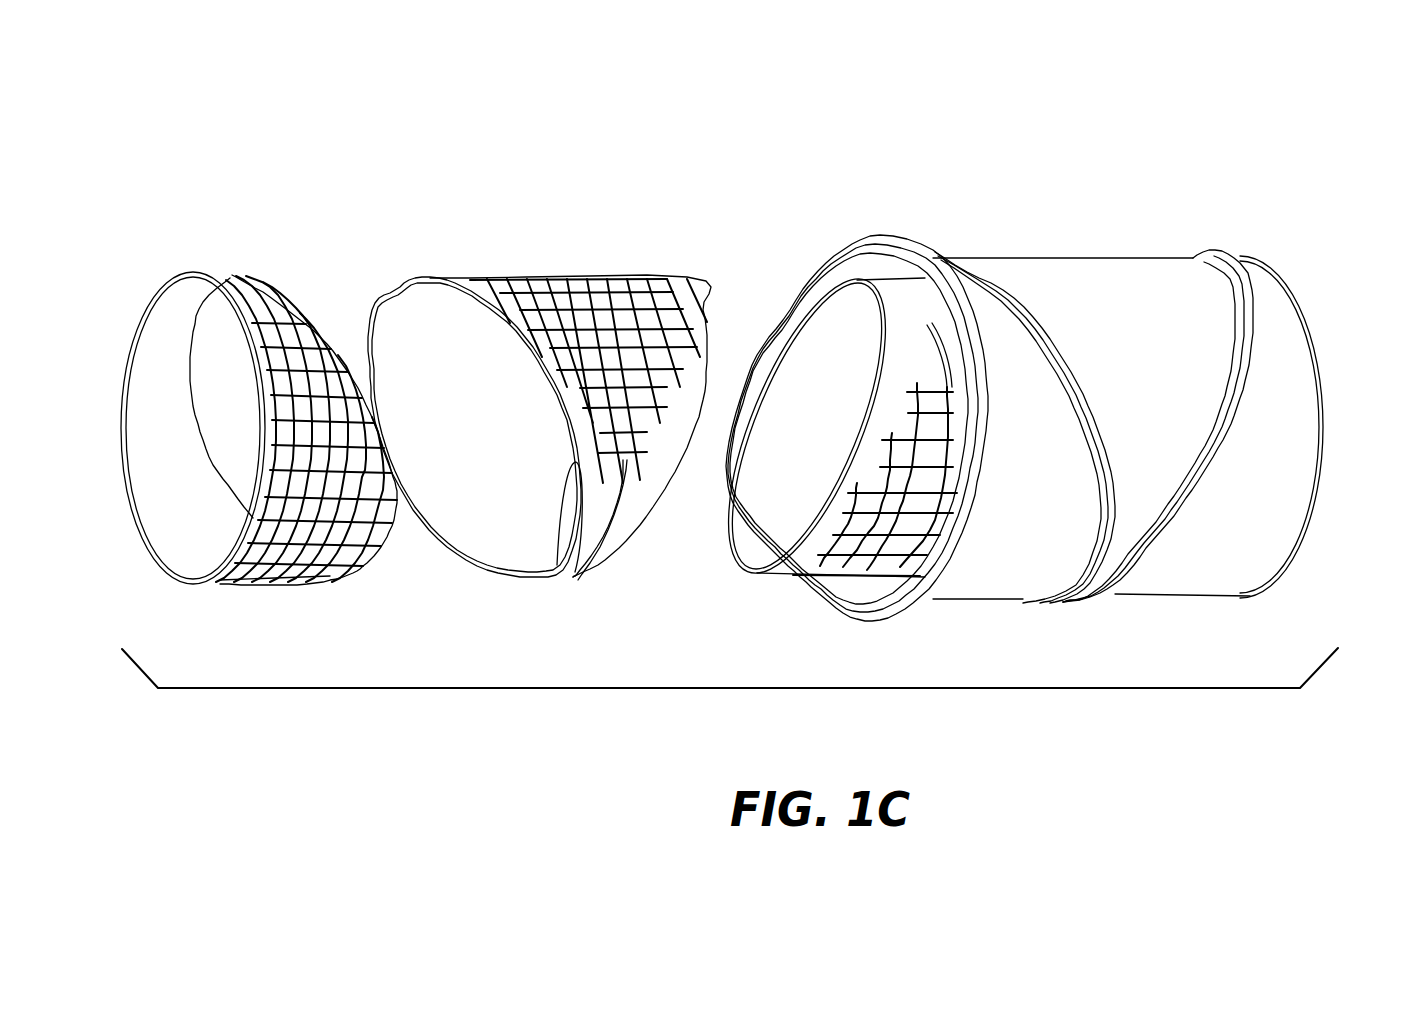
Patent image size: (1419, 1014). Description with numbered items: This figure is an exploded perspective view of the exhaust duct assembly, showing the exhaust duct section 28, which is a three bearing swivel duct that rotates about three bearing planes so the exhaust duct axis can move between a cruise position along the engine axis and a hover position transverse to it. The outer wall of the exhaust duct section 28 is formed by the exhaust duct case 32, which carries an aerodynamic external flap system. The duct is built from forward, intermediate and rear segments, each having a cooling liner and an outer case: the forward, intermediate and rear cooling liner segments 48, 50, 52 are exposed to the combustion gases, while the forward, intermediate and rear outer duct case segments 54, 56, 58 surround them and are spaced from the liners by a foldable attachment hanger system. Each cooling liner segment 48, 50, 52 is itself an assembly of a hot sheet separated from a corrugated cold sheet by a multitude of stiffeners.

The exhaust duct section 28 is at (1232, 130).
The exhaust duct case 32 is at (1310, 235).
The forward cooling liner segment 48 is at (300, 587).
The intermediate cooling liner segment 50 is at (553, 577).
The rear cooling liner segment 52 is at (792, 578).
The forward outer duct case segment 54 is at (990, 585).
The intermediate outer duct case segment 56 is at (1110, 275).
The rear outer duct case segment 58 is at (1217, 580).